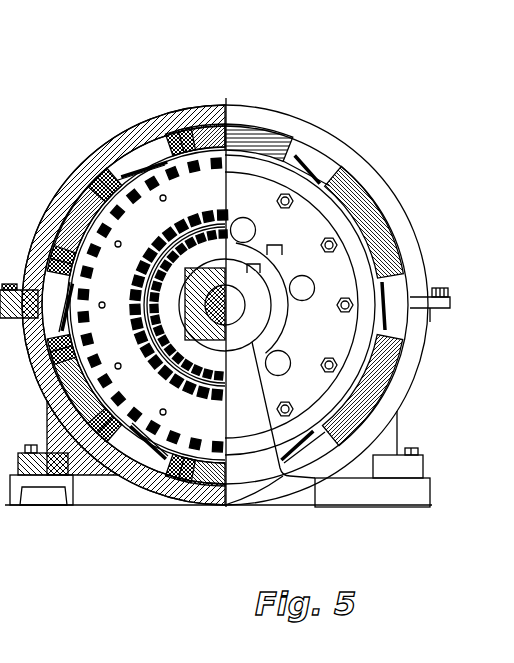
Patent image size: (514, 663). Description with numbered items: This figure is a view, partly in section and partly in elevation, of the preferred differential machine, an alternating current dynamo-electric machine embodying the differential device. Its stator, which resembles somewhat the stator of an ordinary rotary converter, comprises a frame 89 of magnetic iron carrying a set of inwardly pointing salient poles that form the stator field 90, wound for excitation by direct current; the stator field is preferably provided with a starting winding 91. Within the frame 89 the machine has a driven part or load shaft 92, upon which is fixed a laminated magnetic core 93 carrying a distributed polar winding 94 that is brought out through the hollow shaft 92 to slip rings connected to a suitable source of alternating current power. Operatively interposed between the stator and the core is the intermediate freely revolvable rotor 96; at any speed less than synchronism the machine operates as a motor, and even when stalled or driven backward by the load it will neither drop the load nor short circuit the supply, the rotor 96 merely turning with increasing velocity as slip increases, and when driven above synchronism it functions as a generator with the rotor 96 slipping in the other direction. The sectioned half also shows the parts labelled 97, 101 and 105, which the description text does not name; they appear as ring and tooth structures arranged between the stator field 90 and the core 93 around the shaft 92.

The frame 89 is at (402, 387).
The stator field 90 is at (77, 208).
The starting winding 91 is at (122, 134).
The load shaft 92 is at (236, 303).
The laminated magnetic core 93 is at (215, 358).
The distributed polar winding 94 is at (165, 335).
The intermediate freely revolvable rotor 96 is at (340, 267).
The stator core ring 97 is at (85, 235).
The stator teeth 101 is at (181, 224).
The spacer blocks 105 is at (183, 140).